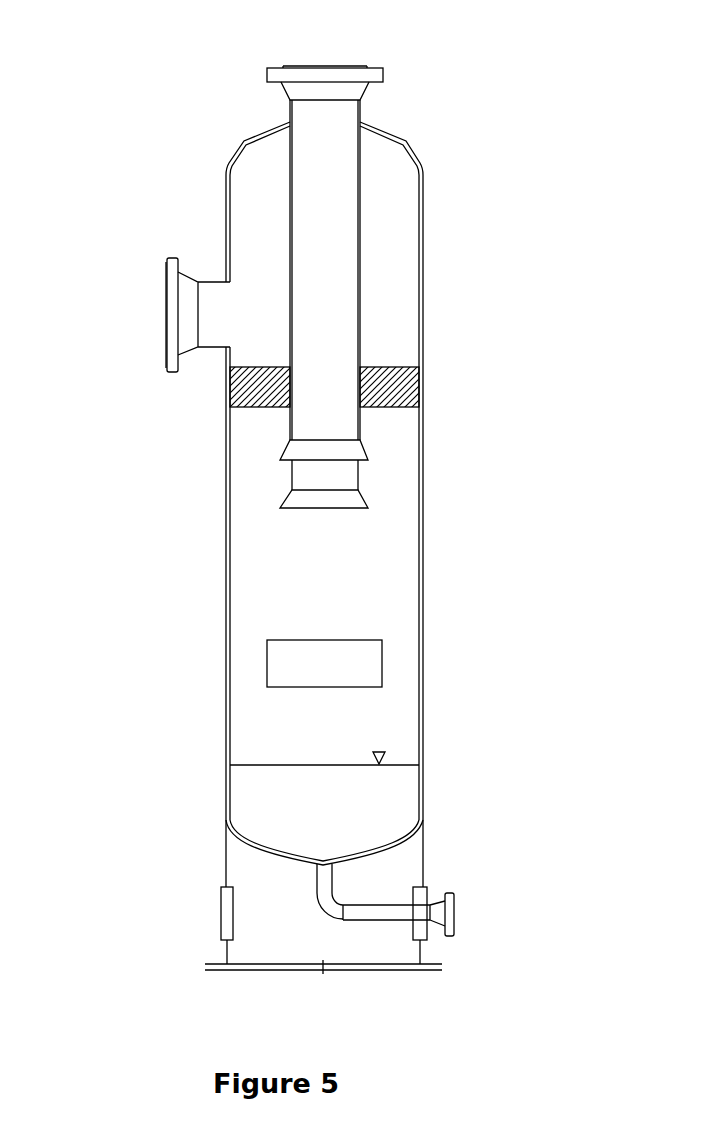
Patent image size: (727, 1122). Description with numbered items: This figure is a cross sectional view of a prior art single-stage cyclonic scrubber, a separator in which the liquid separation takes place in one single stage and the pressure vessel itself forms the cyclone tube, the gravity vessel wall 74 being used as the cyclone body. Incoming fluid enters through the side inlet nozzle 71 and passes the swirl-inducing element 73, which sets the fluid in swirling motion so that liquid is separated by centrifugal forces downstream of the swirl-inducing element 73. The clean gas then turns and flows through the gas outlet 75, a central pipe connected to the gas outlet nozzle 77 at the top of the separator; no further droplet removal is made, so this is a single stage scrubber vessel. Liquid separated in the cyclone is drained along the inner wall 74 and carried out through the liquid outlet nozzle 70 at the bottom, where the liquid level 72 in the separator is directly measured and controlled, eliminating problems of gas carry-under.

The liquid outlet nozzle 70 is at (454, 910).
The side inlet nozzle 71 is at (163, 315).
The liquid level 72 is at (383, 753).
The swirl-inducing element 73 is at (423, 363).
The gravity vessel wall 74 is at (418, 595).
The gas outlet 75 is at (323, 511).
The gas outlet nozzle 77 is at (325, 65).